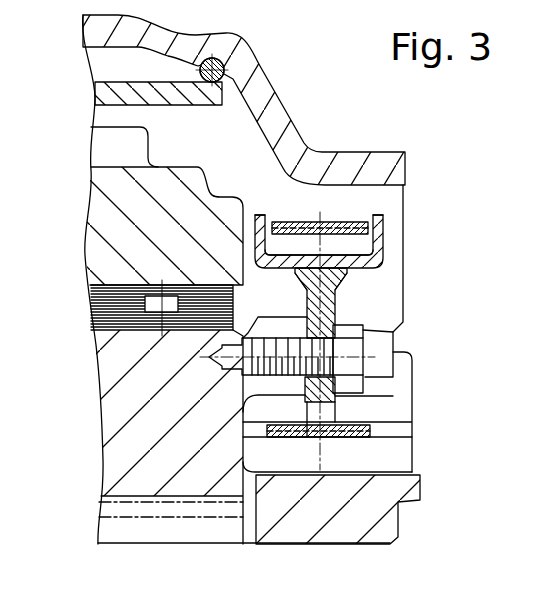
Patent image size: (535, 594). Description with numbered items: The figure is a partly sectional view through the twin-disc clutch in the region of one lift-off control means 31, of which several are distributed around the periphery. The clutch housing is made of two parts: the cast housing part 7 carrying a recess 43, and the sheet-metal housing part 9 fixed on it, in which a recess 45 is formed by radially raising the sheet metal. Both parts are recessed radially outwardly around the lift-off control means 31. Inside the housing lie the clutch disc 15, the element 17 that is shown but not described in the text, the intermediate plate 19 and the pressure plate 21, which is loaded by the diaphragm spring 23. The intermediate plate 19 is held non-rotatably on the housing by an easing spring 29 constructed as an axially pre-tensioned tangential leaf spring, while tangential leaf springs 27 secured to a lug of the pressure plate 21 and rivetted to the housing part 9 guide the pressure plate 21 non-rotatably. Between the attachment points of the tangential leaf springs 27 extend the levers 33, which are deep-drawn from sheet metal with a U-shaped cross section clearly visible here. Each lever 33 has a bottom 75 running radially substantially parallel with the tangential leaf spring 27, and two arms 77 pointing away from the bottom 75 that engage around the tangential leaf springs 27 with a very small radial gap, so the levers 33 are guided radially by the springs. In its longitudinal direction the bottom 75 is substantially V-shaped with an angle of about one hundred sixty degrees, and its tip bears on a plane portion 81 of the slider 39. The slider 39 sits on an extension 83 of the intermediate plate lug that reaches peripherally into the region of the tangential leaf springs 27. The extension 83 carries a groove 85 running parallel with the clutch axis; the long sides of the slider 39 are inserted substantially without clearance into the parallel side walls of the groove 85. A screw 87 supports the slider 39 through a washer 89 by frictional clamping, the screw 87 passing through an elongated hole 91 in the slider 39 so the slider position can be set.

The housing part 9 is at (262, 70).
The recess 45 is at (395, 183).
The diaphragm spring 23 is at (95, 95).
The pressure plate 21 is at (90, 230).
The lamination stack 17 is at (73, 311).
The intermediate plate 19 is at (112, 383).
The clutch disc 15 is at (110, 511).
The housing part 7 is at (380, 528).
The tangential leaf springs 27 is at (353, 206).
The arms 77 is at (257, 212).
The bottom 75 is at (378, 262).
The levers 33 is at (397, 265).
The slider 39 is at (336, 292).
The plane portion 81 is at (300, 280).
The lift-off control means 31 is at (362, 315).
The elongated hole 91 is at (395, 333).
The screw 87 is at (358, 383).
The washer 89 is at (338, 393).
The groove 85 is at (400, 421).
The extension 83 is at (290, 425).
The recess 43 is at (404, 472).
The easing spring 29 is at (312, 403).